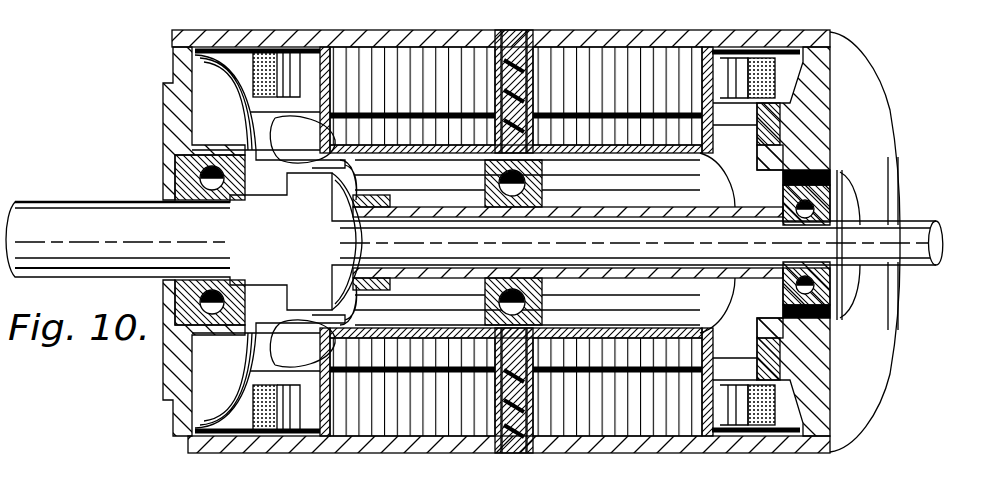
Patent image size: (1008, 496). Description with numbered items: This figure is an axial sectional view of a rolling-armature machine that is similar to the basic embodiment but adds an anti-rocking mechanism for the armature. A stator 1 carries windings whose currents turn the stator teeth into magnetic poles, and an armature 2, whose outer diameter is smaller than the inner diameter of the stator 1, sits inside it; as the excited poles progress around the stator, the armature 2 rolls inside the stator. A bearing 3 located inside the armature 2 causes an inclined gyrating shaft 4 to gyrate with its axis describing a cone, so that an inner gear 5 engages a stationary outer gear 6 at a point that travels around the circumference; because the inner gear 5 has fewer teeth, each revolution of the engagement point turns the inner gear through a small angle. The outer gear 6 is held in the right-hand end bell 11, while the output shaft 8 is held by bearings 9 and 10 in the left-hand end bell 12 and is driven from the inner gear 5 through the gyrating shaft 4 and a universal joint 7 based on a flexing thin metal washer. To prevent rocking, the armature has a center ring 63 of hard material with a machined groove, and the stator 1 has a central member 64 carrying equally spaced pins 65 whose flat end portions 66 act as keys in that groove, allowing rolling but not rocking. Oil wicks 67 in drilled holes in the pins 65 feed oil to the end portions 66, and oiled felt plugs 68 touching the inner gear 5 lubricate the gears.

The stator 1 is at (617, 67).
The armature 2 is at (645, 354).
The bearing 3 is at (547, 307).
The gyrating shaft 4 is at (695, 272).
The inner gear 5 is at (813, 318).
The outer gear 6 is at (770, 360).
The universal joint 7 is at (350, 318).
The shaft 8 is at (43, 222).
The bearing 9 is at (204, 182).
The bearing 10 is at (797, 188).
The right-hand end bell 11 is at (817, 110).
The left-hand end bell 12 is at (190, 140).
The ring 63 is at (502, 356).
The central member 64 is at (526, 60).
The pins 65 is at (516, 405).
The flat end portions 66 is at (500, 366).
The oil wicks 67 is at (499, 60).
The oiled felt plugs 68 is at (825, 323).